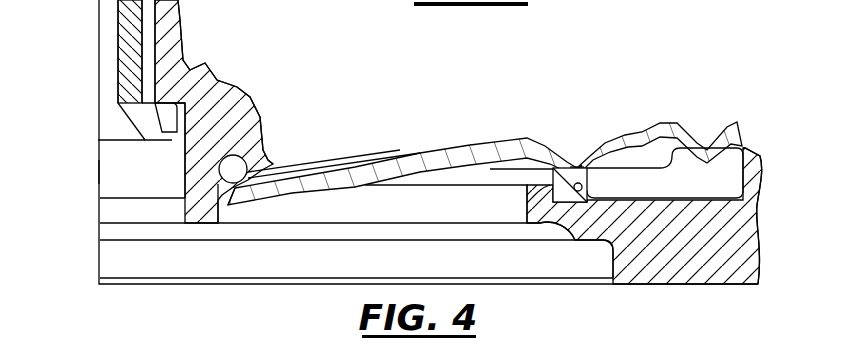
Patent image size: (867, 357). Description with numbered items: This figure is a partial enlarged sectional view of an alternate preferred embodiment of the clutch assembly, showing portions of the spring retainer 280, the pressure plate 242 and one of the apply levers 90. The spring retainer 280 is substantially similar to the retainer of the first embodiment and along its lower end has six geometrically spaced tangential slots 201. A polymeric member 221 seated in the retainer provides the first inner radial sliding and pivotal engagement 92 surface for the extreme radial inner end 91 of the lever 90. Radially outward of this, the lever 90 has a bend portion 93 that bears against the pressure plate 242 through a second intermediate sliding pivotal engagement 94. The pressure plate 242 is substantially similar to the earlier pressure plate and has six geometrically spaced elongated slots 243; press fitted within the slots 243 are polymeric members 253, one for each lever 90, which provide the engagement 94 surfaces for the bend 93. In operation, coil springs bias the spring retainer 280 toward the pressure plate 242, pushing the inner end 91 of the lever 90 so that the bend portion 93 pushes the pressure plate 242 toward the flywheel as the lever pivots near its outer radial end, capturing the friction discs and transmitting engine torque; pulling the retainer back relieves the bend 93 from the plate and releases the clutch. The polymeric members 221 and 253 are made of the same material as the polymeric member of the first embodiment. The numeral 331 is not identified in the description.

The tangential slots 201 is at (219, 175).
The spring retainer 280 is at (227, 93).
The polymeric member 221 is at (250, 157).
The first sliding pivotal engagement 92 is at (280, 166).
The radial inner end 91 is at (233, 202).
The apply lever 90 is at (457, 143).
The bend portion 93 is at (578, 163).
The second sliding pivotal engagement 94 is at (578, 170).
The pressure plate 242 is at (763, 230).
The elongated slots 243 is at (588, 190).
The polymeric member 253 is at (527, 208).
The upper element 331 is at (705, 4).